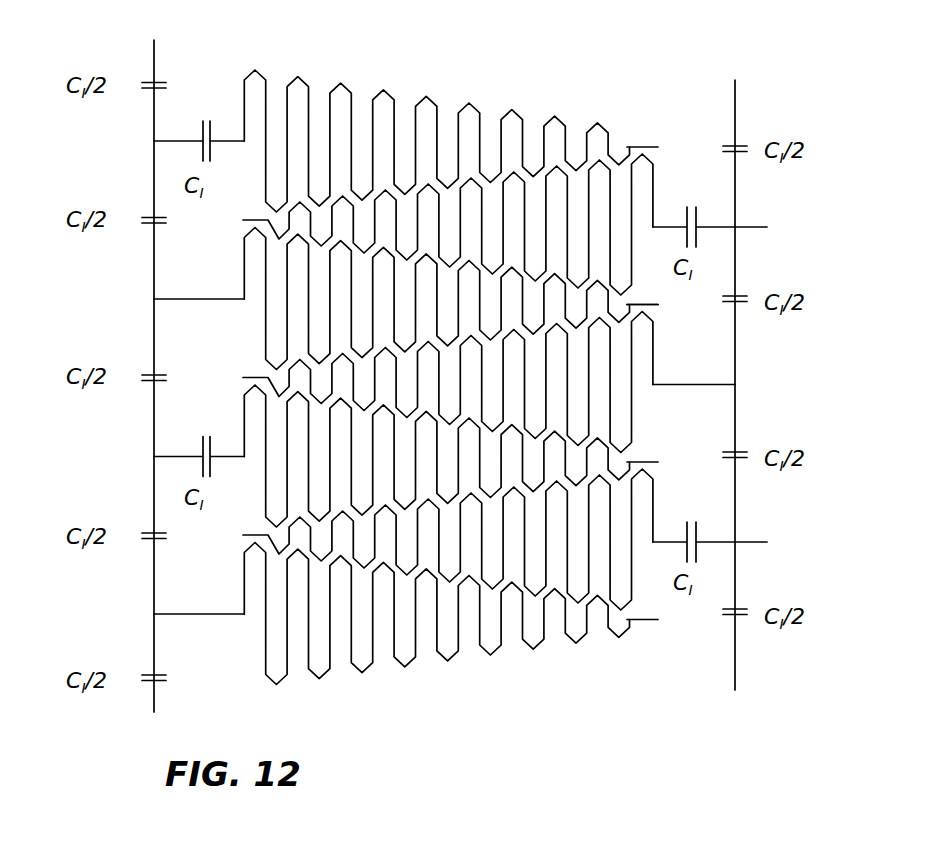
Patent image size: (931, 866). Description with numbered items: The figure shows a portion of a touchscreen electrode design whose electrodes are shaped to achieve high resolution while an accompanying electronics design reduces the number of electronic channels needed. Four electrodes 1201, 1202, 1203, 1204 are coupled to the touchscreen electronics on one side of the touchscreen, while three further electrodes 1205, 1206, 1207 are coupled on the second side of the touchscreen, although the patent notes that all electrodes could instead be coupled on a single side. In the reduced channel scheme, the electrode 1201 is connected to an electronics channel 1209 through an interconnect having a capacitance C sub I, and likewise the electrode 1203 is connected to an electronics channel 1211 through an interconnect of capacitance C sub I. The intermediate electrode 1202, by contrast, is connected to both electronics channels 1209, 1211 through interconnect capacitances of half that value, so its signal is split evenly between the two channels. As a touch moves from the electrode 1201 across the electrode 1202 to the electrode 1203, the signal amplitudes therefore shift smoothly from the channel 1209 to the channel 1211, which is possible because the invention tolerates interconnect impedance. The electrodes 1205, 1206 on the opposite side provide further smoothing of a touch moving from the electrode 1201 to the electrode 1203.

The electrode 1201 is at (255, 70).
The electrode 1202 is at (250, 227).
The electrode 1203 is at (250, 384).
The electrode 1204 is at (250, 544).
The electrode 1205 is at (653, 160).
The electrode 1206 is at (652, 318).
The electrode 1207 is at (652, 477).
The electronics channel 1209 is at (151, 146).
The electronics channel 1211 is at (148, 461).